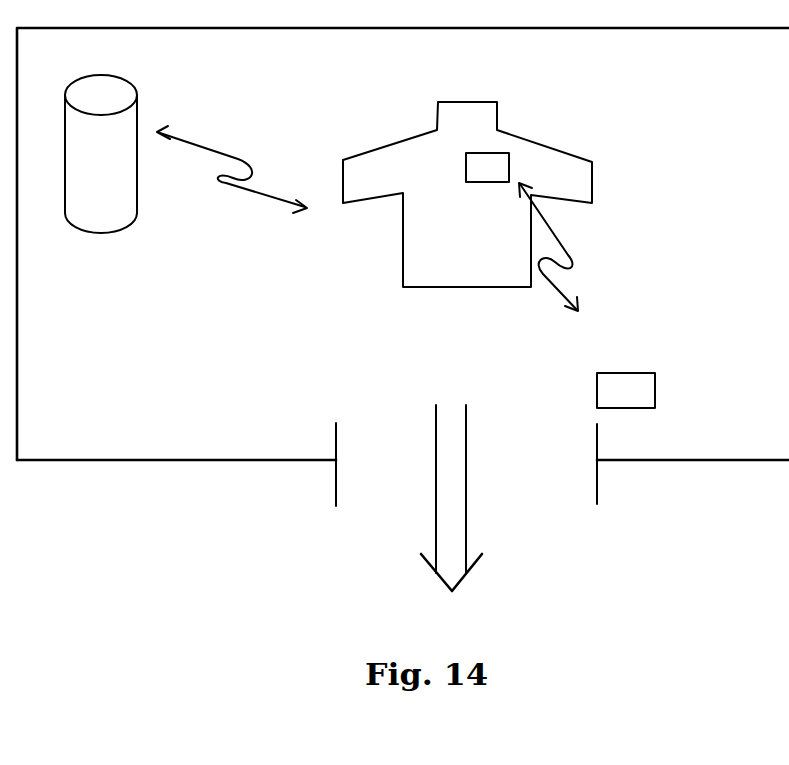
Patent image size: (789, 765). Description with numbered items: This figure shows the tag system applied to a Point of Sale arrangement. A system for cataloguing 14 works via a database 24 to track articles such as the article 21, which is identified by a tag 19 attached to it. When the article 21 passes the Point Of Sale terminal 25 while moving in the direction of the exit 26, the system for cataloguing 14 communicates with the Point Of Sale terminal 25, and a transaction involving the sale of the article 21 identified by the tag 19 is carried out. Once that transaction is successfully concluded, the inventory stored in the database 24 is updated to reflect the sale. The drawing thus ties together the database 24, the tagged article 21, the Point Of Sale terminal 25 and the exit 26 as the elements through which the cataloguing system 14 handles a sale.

The system for cataloguing 14 is at (225, 123).
The tag 19 is at (500, 160).
The article 21 is at (407, 260).
The database 24 is at (135, 88).
The Point Of Sale terminal 25 is at (655, 382).
The exit 26 is at (547, 502).